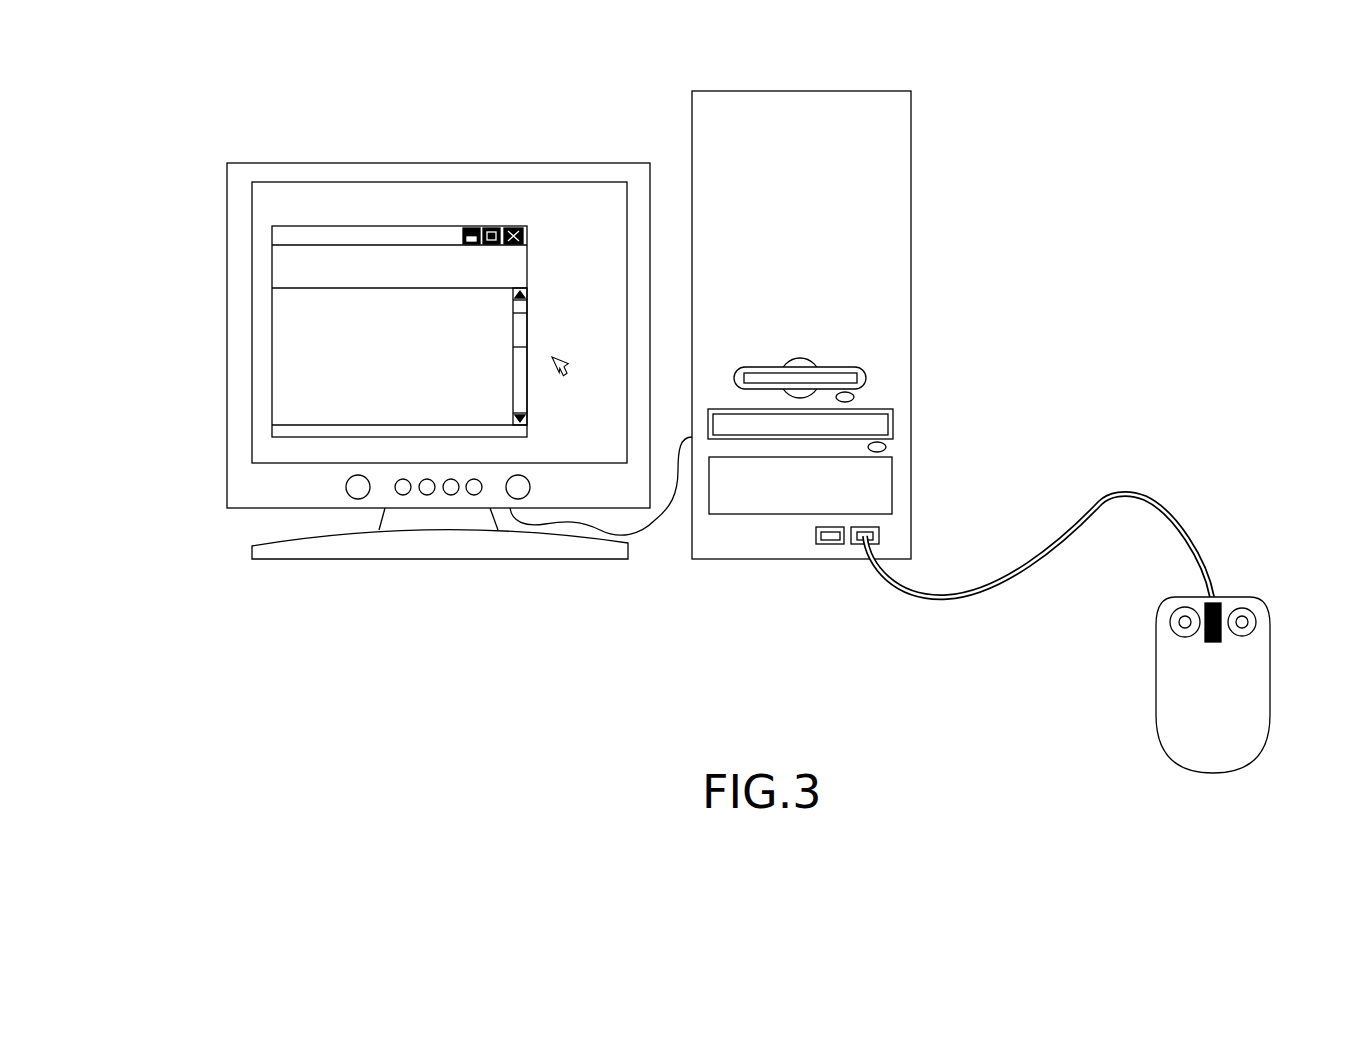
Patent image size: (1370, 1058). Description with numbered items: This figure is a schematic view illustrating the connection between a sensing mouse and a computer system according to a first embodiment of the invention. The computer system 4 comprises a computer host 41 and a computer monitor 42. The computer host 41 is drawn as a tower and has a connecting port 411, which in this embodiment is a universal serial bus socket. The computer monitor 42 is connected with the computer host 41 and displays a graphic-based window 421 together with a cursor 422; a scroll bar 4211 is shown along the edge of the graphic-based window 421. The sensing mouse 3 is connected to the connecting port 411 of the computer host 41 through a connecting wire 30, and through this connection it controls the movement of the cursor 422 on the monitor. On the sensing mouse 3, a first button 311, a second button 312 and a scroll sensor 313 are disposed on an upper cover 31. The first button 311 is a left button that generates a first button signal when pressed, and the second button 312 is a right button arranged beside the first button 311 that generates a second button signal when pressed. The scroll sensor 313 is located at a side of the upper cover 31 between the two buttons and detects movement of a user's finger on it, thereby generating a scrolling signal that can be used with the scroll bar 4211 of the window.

The sensing mouse 3 is at (1240, 556).
The connecting wire 30 is at (1155, 500).
The upper cover 31 is at (1253, 690).
The first button 311 is at (1172, 615).
The second button 312 is at (1255, 615).
The scroll sensor 313 is at (1207, 603).
The computer system 4 is at (717, 69).
The computer host 41 is at (805, 100).
The connecting port 411 is at (825, 540).
The computer monitor 42 is at (535, 158).
The graphic-based window 421 is at (354, 267).
The scroll bar 4211 is at (521, 330).
The cursor 422 is at (562, 372).